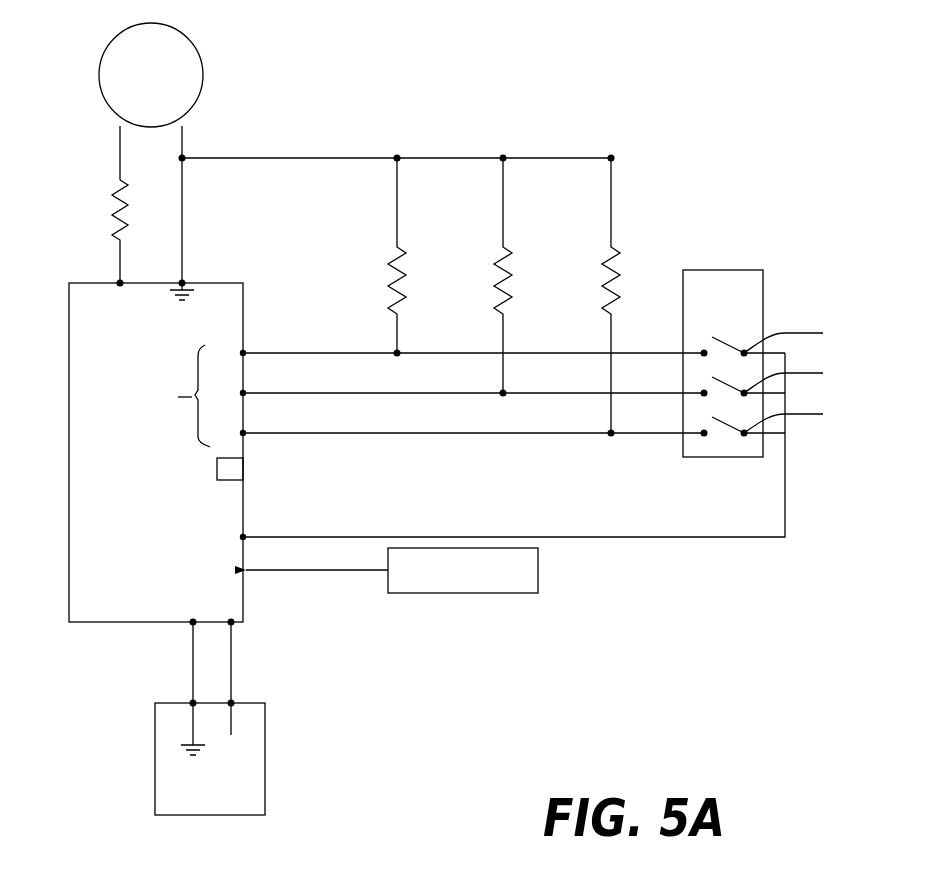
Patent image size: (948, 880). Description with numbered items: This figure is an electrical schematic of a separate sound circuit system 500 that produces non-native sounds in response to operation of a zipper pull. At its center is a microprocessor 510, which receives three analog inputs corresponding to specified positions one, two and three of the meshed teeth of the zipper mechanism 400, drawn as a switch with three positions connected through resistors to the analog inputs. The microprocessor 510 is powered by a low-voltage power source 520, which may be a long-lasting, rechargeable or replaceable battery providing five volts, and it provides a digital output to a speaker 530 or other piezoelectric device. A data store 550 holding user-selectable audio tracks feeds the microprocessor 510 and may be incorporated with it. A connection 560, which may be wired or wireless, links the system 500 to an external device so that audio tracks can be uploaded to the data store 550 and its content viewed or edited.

The sound circuit system 500 is at (823, 636).
The speaker 530 is at (203, 80).
The microprocessor 510 is at (243, 498).
The connection 560 is at (243, 461).
The data store 550 is at (538, 579).
The low-voltage power source 520 is at (257, 740).
The zipper mechanism 400 is at (764, 287).